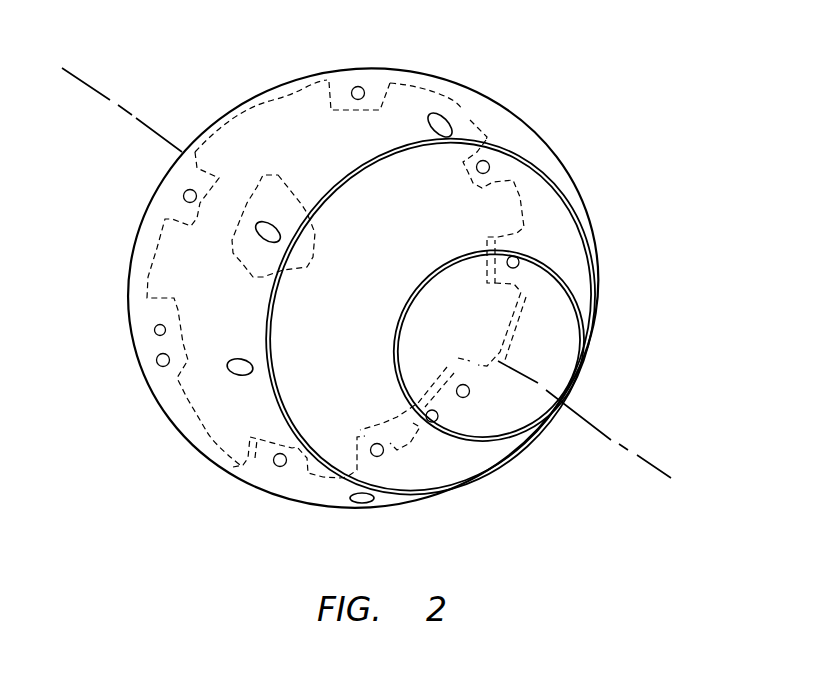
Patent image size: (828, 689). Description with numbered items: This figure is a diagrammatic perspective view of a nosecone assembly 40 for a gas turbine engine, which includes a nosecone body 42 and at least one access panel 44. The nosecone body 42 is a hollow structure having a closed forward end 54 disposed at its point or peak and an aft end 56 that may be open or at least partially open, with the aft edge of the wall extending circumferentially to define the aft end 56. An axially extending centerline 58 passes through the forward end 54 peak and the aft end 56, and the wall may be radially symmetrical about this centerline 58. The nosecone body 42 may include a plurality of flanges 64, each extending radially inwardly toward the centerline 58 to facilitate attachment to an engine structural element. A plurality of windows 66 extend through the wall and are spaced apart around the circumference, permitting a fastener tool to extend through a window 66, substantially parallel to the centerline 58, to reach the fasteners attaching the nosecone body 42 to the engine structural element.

The nosecone assembly 40 is at (588, 104).
The nosecone body 42 is at (598, 201).
The access panel 44 is at (262, 192).
The forward end 54 is at (537, 341).
The aft end 56 is at (224, 111).
The axially extending centerline 58 is at (664, 470).
The flanges 64 is at (392, 70).
The windows 66 is at (447, 124).